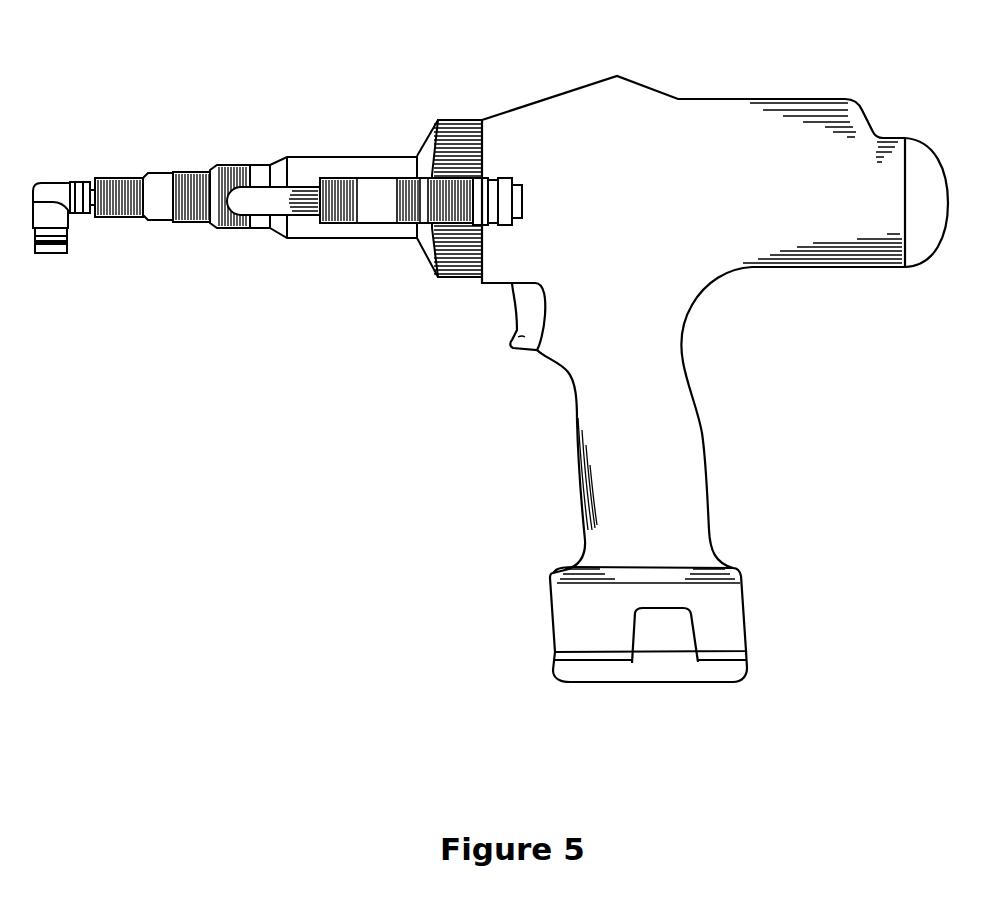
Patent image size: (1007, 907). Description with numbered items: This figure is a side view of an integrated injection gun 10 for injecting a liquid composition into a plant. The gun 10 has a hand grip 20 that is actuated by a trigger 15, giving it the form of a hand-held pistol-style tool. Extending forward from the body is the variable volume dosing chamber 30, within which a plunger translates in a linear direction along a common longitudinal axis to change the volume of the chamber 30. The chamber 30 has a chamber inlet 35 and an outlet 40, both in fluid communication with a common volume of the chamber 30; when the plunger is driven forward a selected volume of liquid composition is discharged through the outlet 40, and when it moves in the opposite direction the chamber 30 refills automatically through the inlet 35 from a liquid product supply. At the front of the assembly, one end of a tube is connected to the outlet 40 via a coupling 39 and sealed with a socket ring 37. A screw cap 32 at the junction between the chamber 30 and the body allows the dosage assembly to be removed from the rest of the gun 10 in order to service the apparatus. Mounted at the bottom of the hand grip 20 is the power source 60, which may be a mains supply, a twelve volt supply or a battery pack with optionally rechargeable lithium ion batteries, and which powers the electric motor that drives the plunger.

The integrated injection gun 10 is at (733, 193).
The trigger 15 is at (518, 352).
The hand grip 20 is at (680, 443).
The variable volume dosing chamber 30 is at (318, 157).
The screw cap 32 is at (462, 119).
The chamber inlet 35 is at (384, 218).
The socket ring 37 is at (506, 218).
The coupling 39 is at (527, 203).
The outlet 40 is at (53, 237).
The power source 60 is at (658, 637).